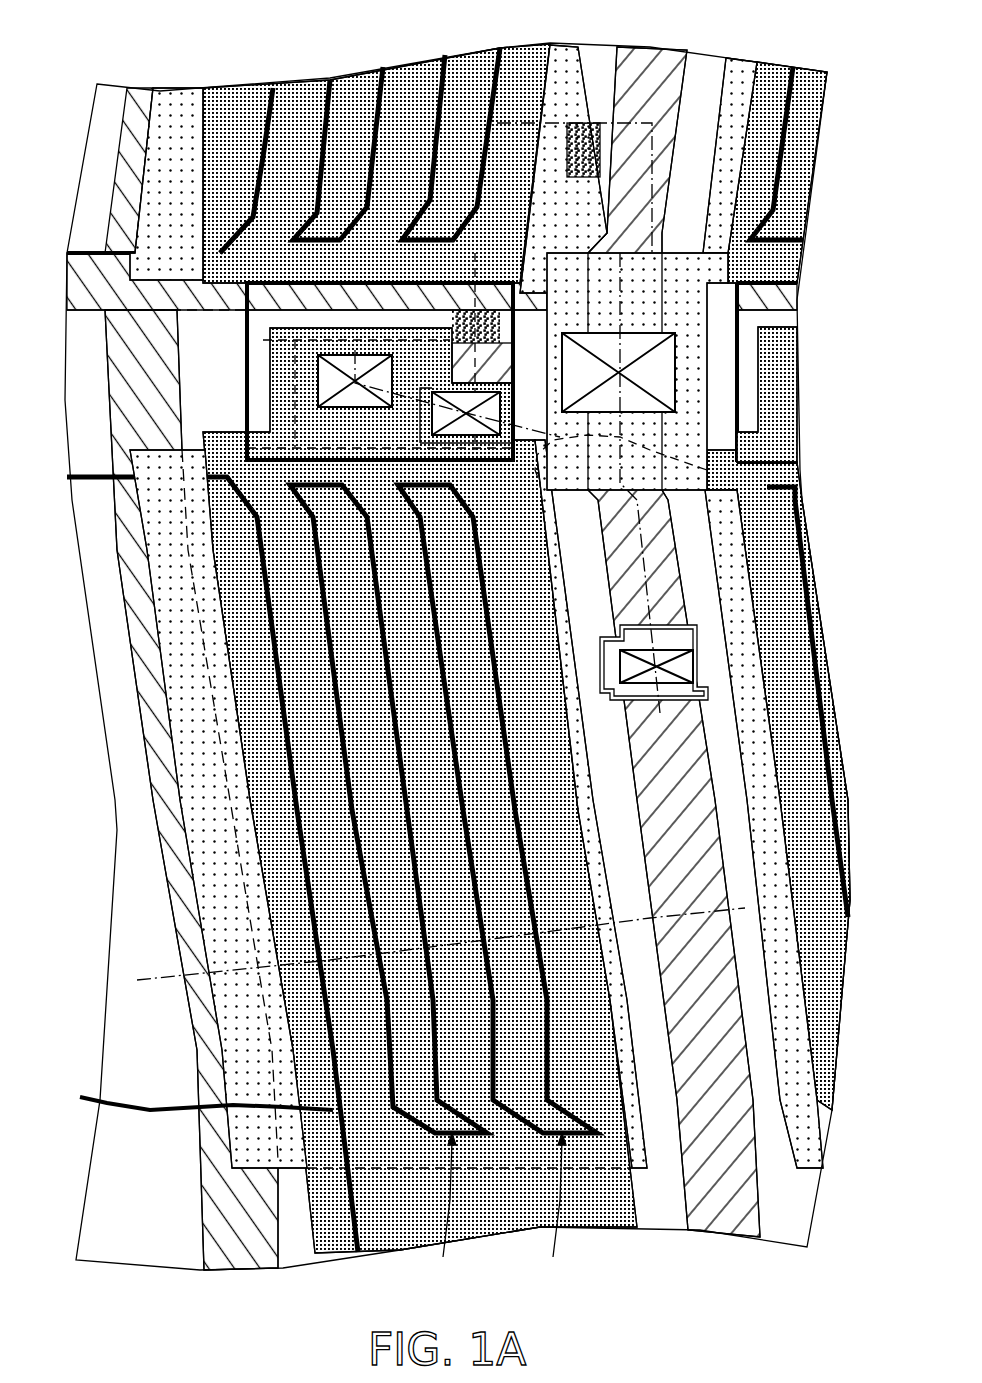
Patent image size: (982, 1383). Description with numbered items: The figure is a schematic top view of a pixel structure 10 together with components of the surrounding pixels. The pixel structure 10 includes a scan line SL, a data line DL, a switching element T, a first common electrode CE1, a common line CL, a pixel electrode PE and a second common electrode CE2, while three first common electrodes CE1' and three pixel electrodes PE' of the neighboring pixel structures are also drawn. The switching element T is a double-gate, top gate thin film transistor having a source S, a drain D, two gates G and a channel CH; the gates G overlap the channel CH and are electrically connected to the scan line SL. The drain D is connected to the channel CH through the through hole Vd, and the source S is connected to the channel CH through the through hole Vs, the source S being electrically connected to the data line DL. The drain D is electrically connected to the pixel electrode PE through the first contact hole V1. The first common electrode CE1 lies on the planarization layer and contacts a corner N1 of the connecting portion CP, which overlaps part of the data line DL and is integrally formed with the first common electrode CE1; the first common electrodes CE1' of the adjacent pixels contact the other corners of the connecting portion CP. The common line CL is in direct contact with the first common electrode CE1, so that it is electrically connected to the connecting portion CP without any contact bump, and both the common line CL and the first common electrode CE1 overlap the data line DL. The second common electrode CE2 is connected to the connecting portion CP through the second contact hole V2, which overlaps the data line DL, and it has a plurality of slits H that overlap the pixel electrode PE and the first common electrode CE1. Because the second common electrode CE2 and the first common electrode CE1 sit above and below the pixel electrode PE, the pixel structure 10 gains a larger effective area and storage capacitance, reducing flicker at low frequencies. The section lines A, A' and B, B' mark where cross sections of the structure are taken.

The switching element T is at (53, 4).
The source S is at (697, 630).
The drain D is at (300, 348).
The gate G is at (477, 263).
The channel CH is at (592, 170).
The first common electrode of adjacent pixel structure CE1' is at (517, 585).
The pixel electrode of adjacent pixel structure PE' is at (550, 555).
The scan line SL is at (83, 283).
The first contact hole V1 is at (318, 378).
The second contact hole V2 is at (677, 370).
The section line A-A' A is at (497, 280).
The connecting portion CP is at (693, 418).
The through hole Vd is at (432, 430).
The corner N1 is at (707, 470).
The section line A-A' end A' is at (647, 500).
The through hole Vs is at (667, 688).
The first common electrode CE1 is at (330, 804).
The pixel electrode PE is at (346, 790).
The section line B-B' B is at (624, 907).
The section line B-B' end B' is at (317, 959).
The second common electrode CE2 is at (184, 1095).
The common line CL is at (233, 1221).
The slits H is at (498, 1213).
The data line DL is at (723, 1198).
The pixel structure 10 is at (848, 1288).